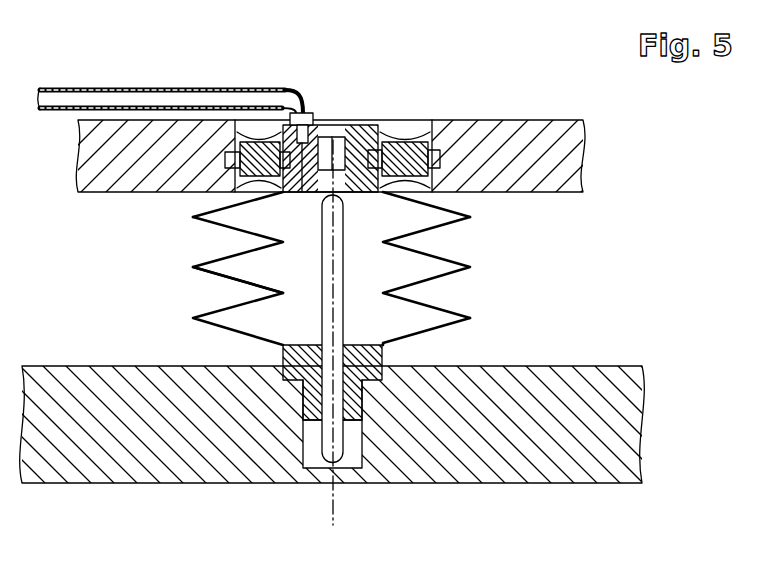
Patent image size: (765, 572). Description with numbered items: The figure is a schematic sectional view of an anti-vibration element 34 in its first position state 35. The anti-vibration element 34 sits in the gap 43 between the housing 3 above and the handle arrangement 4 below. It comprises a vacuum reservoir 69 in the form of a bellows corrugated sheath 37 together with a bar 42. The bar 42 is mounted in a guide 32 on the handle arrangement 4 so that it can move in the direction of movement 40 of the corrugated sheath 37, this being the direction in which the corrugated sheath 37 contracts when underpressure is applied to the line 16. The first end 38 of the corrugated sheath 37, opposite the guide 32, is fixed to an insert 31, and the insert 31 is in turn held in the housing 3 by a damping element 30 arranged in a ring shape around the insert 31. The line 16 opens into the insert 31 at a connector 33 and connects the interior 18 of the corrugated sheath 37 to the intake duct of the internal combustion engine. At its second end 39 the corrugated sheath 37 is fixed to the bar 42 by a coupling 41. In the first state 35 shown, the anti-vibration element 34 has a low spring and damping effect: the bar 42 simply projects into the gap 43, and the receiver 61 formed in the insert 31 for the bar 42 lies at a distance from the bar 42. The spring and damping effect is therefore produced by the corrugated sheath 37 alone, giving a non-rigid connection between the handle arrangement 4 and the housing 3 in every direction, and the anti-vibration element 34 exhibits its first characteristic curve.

The housing 3 is at (502, 143).
The handle arrangement 4 is at (557, 468).
The line 16 is at (134, 100).
The interior 18 is at (381, 279).
The damping element 30 is at (410, 148).
The insert 31 is at (363, 135).
The guide 32 is at (310, 402).
The connector 33 is at (301, 112).
The anti-vibration element 34 is at (602, 234).
The first position state 35 is at (182, 266).
The corrugated sheath 37 is at (447, 258).
The first end 38 is at (423, 197).
The second end 39 is at (412, 337).
The direction of movement 40 is at (336, 507).
The coupling 41 is at (283, 350).
The bar 42 is at (327, 442).
The gap 43 is at (593, 306).
The receiver 61 is at (340, 137).
The vacuum reservoir 69 is at (253, 270).